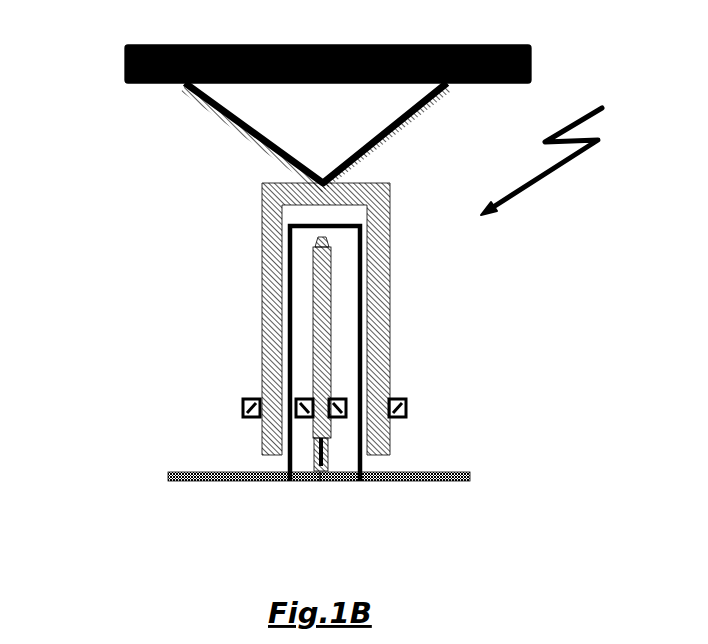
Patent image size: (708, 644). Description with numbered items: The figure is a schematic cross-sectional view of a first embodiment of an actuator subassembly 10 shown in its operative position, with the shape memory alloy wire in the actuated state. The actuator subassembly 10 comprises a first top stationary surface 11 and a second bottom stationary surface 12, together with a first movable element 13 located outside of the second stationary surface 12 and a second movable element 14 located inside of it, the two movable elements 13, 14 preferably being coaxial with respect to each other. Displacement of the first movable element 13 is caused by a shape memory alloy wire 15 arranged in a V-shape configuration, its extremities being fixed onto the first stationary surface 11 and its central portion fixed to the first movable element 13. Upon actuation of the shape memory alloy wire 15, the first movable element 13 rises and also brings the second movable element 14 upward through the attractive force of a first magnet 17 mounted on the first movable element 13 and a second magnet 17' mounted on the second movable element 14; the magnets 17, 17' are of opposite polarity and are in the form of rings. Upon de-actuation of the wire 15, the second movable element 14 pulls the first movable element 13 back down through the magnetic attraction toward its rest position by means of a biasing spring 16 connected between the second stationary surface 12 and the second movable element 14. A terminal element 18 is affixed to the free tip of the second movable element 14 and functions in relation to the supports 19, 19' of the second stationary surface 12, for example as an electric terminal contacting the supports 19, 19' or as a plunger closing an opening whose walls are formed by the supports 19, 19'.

The actuator subassembly 10 is at (568, 147).
The first top stationary surface 11 is at (138, 83).
The second bottom stationary surface 12 is at (352, 463).
The first movable element 13 is at (262, 285).
The second movable element 14 is at (320, 312).
The shape memory alloy wire 15 is at (213, 117).
The spring 16 is at (322, 236).
The first magnet 17 is at (282, 422).
The second magnet 17' is at (415, 410).
The terminal element 18 is at (320, 463).
The support 19 is at (206, 483).
The support 19' is at (455, 498).